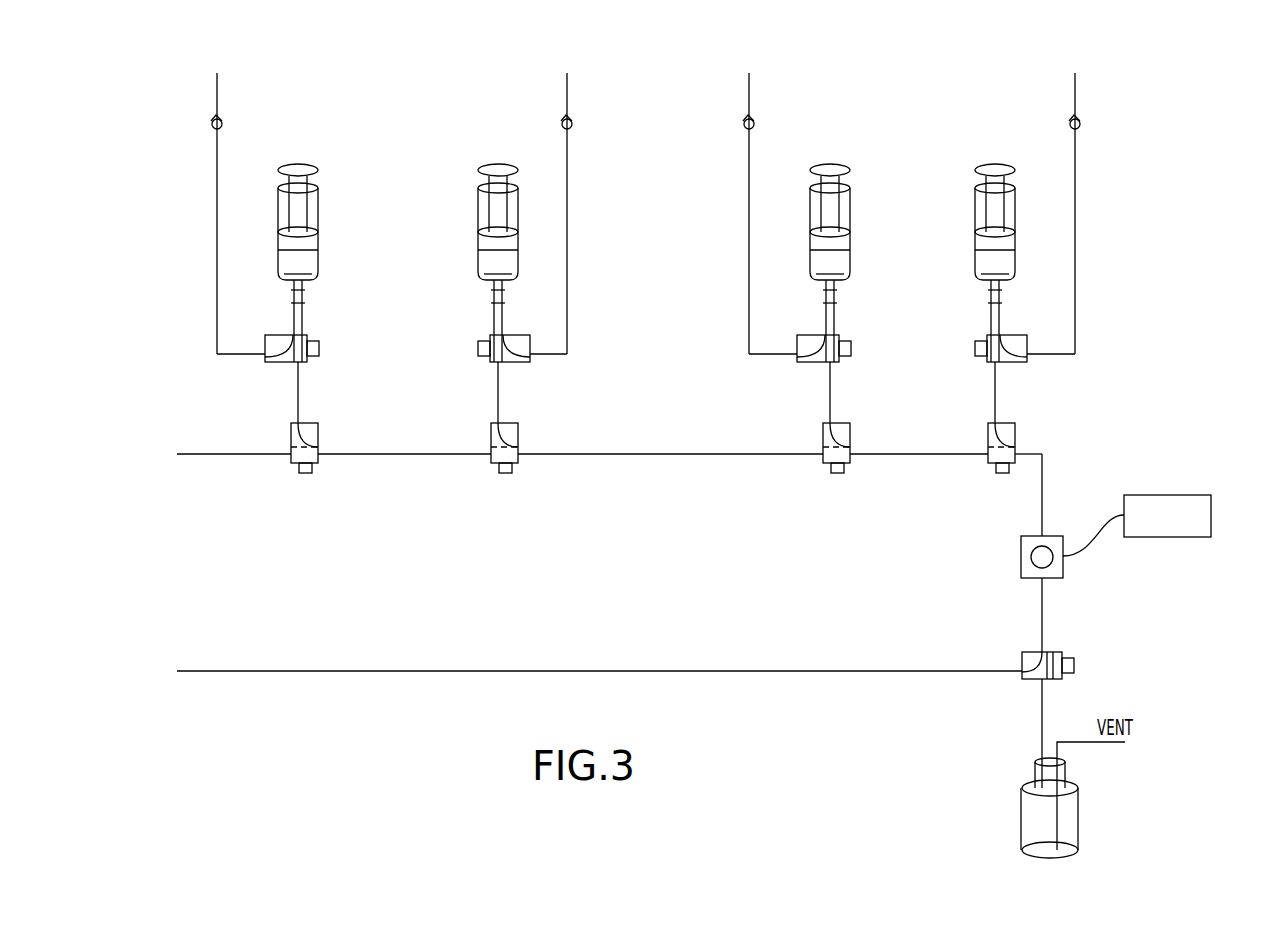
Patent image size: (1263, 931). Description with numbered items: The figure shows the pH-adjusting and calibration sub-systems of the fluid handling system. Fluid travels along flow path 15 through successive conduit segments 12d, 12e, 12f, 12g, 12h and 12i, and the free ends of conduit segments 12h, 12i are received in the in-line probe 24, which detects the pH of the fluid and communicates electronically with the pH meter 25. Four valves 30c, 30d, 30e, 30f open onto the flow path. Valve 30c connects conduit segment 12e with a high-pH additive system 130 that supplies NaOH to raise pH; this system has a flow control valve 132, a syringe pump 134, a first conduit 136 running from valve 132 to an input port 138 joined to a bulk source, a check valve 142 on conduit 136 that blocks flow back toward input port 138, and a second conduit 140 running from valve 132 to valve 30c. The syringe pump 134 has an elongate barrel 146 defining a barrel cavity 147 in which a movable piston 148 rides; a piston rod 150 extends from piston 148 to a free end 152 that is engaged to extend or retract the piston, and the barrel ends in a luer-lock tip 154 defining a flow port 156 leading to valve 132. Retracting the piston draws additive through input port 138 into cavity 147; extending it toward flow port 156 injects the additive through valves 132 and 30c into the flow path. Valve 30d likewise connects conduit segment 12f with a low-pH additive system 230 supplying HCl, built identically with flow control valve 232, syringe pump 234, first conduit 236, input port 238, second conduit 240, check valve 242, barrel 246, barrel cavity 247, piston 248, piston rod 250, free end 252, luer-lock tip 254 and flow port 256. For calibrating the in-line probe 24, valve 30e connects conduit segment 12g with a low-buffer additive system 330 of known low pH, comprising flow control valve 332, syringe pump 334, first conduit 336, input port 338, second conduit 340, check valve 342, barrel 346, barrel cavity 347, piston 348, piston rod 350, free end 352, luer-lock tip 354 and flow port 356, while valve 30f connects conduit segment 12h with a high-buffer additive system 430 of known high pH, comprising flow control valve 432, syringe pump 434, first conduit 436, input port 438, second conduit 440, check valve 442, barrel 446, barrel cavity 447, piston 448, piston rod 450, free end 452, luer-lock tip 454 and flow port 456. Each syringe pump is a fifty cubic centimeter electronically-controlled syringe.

The conduit segment 12d is at (227, 455).
The conduit segment 12e is at (441, 455).
The conduit segment 12f is at (719, 455).
The conduit segment 12g is at (898, 455).
The conduit segment 12h is at (1043, 477).
The conduit segment 12i is at (1043, 631).
The flow path 15 is at (582, 571).
The in-line probe 24 is at (1063, 570).
The pH meter 25 is at (1162, 495).
The valve 30c is at (313, 466).
The valve 30d is at (520, 466).
The valve 30e is at (830, 469).
The valve 30f is at (988, 466).
The high-pH additive system 130 is at (175, 305).
The flow control valve 132 is at (276, 362).
The syringe pump 134 is at (318, 254).
The first conduit 136 is at (217, 240).
The input port 138 is at (217, 78).
The second conduit 140 is at (299, 395).
The check valve 142 is at (212, 128).
The barrel 146 is at (318, 230).
The barrel cavity 147 is at (298, 263).
The piston 148 is at (278, 241).
The piston rod 150 is at (305, 207).
The free end 152 is at (316, 192).
The luer-lock tip 154 is at (303, 290).
The flow port 156 is at (293, 298).
The low-pH additive system 230 is at (597, 316).
The flow control valve 232 is at (520, 362).
The syringe pump 234 is at (478, 258).
The first conduit 236 is at (567, 232).
The input port 238 is at (567, 78).
The second conduit 240 is at (497, 390).
The check valve 242 is at (572, 128).
The barrel 246 is at (478, 228).
The barrel cavity 247 is at (498, 263).
The piston 248 is at (545, 235).
The piston rod 250 is at (490, 208).
The free end 252 is at (480, 190).
The luer-lock tip 254 is at (503, 290).
The flow port 256 is at (493, 298).
The low-buffer additive system 330 is at (732, 355).
The flow control valve 332 is at (835, 362).
The syringe pump 334 is at (830, 231).
The first conduit 336 is at (749, 245).
The input port 338 is at (749, 75).
The second conduit 340 is at (829, 397).
The check valve 342 is at (744, 128).
The barrel 346 is at (850, 220).
The barrel cavity 347 is at (830, 263).
The piston 348 is at (810, 235).
The piston rod 350 is at (836, 210).
The free end 352 is at (843, 190).
The luer-lock tip 354 is at (836, 290).
The flow port 356 is at (825, 298).
The high-buffer additive system 430 is at (1150, 292).
The flow control valve 432 is at (1003, 362).
The syringe pump 434 is at (995, 231).
The first conduit 436 is at (1075, 208).
The input port 438 is at (1075, 76).
The second conduit 440 is at (994, 386).
The check valve 442 is at (1080, 128).
The barrel 446 is at (975, 226).
The barrel cavity 447 is at (995, 263).
The piston 448 is at (1015, 240).
The piston rod 450 is at (990, 210).
The free end 452 is at (977, 190).
The luer-lock tip 454 is at (1001, 290).
The flow port 456 is at (990, 298).